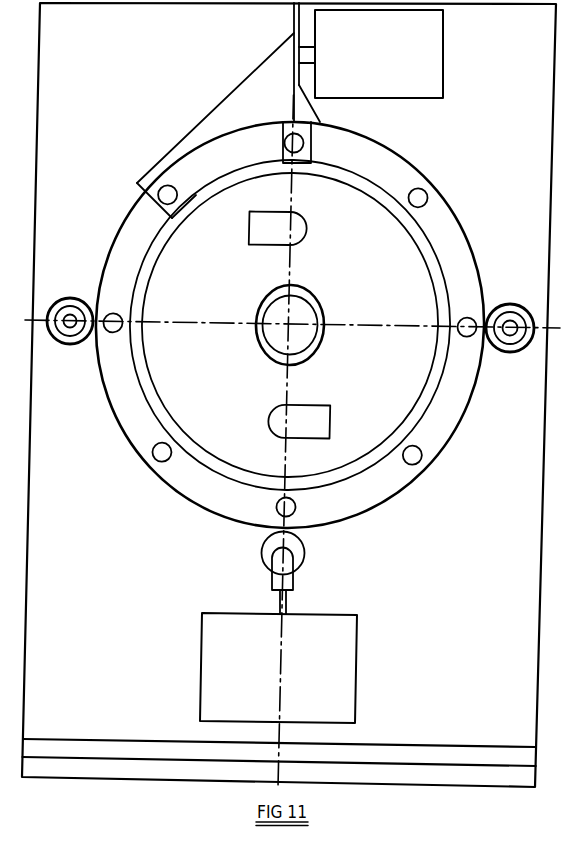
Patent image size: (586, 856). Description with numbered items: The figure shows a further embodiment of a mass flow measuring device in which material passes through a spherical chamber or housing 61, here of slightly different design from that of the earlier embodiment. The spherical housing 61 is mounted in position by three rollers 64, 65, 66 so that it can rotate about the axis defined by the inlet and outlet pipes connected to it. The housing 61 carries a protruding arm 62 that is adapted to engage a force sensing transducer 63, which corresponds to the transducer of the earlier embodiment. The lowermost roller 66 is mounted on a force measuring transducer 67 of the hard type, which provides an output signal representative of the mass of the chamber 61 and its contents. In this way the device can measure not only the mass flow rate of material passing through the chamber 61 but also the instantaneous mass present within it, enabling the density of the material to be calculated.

The spherical housing 61 is at (455, 230).
The protruding arm 62 is at (240, 96).
The force sensing transducer 63 is at (437, 87).
The roller 64 is at (65, 343).
The roller 65 is at (513, 351).
The lowermost roller 66 is at (296, 556).
The force measuring transducer 67 is at (300, 668).